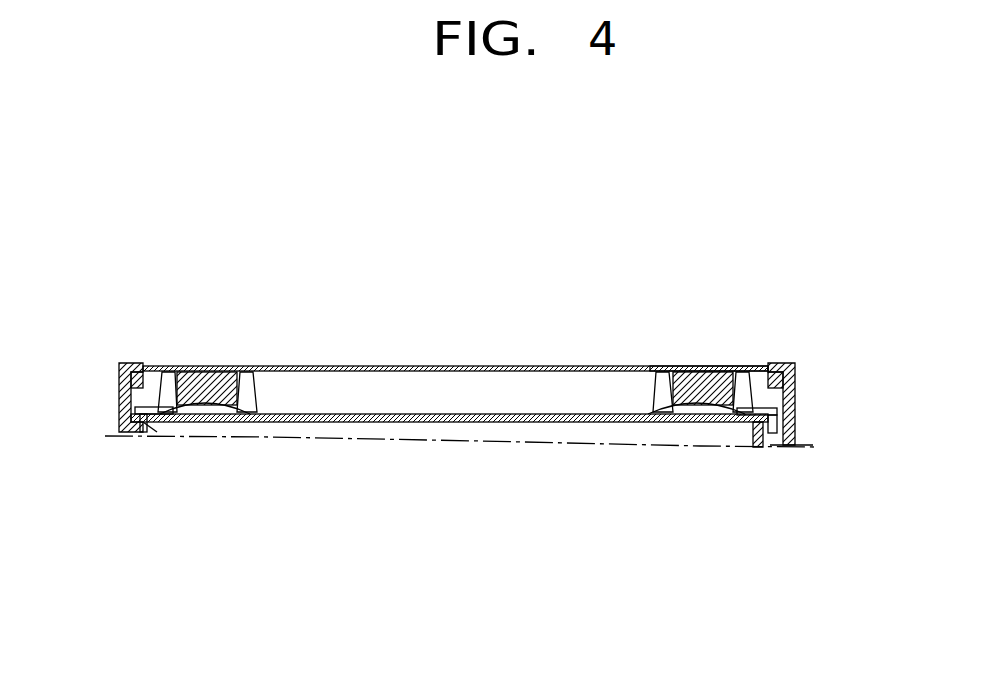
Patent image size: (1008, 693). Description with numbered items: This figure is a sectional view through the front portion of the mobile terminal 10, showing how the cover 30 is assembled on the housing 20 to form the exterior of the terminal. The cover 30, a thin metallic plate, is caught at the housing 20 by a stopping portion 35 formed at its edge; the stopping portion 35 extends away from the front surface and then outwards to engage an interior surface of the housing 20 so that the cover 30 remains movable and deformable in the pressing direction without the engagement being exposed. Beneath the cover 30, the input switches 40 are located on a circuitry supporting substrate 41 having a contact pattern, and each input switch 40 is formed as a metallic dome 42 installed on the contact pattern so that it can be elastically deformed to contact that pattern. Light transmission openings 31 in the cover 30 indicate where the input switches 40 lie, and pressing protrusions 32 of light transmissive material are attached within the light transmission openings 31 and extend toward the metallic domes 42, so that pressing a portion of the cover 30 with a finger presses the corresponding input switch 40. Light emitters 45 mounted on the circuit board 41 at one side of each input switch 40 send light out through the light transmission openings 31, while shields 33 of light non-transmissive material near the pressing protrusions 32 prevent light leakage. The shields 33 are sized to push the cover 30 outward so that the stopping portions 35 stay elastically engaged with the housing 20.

The mobile terminal 10 is at (600, 320).
The housing 20 is at (795, 422).
The cover 30 is at (503, 356).
The light transmission opening 31 is at (690, 364).
The pressing protrusion 32 is at (209, 370).
The shield 33 is at (145, 433).
The stopping portion 35 is at (134, 395).
The input switch 40 is at (449, 502).
The circuitry supporting substrate 41 is at (312, 416).
The metallic dome 42 is at (216, 410).
The light emitter 45 is at (160, 430).